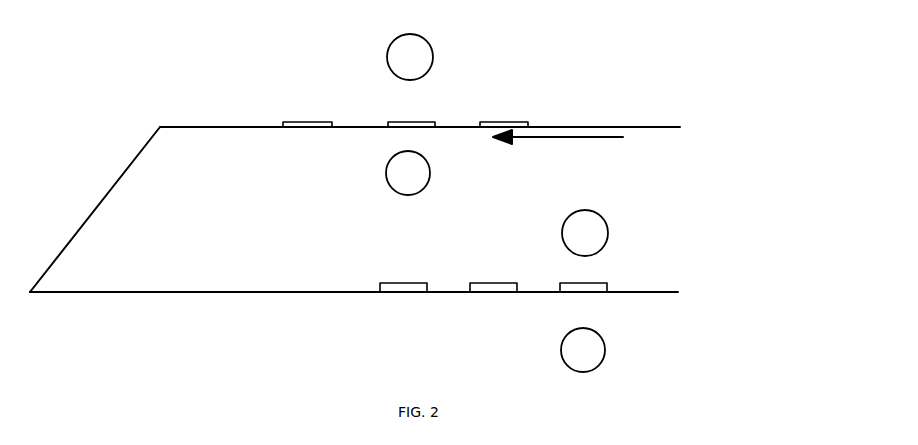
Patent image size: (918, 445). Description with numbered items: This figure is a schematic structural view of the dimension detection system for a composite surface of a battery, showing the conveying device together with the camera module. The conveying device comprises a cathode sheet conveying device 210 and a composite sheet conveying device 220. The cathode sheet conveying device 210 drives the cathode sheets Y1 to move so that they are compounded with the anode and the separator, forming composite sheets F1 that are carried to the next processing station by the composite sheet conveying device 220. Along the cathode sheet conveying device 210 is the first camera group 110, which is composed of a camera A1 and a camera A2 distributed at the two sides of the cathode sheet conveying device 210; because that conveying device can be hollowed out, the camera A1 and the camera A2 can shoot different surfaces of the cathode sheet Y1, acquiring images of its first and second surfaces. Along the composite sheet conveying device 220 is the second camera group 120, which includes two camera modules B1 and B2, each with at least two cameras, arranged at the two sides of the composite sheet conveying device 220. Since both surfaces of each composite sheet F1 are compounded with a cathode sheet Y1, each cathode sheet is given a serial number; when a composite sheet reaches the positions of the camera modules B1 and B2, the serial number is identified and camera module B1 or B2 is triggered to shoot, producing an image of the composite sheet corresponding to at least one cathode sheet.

The first camera group 110 is at (377, 120).
The second camera group 120 is at (541, 277).
The cathode sheet conveying device 210 is at (207, 128).
The composite sheet conveying device 220 is at (328, 292).
The camera A1 is at (388, 55).
The camera A2 is at (386, 175).
The camera module B1 is at (562, 229).
The camera module B2 is at (563, 343).
The cathode sheet Y1 is at (427, 122).
The composite sheet F1 is at (608, 288).